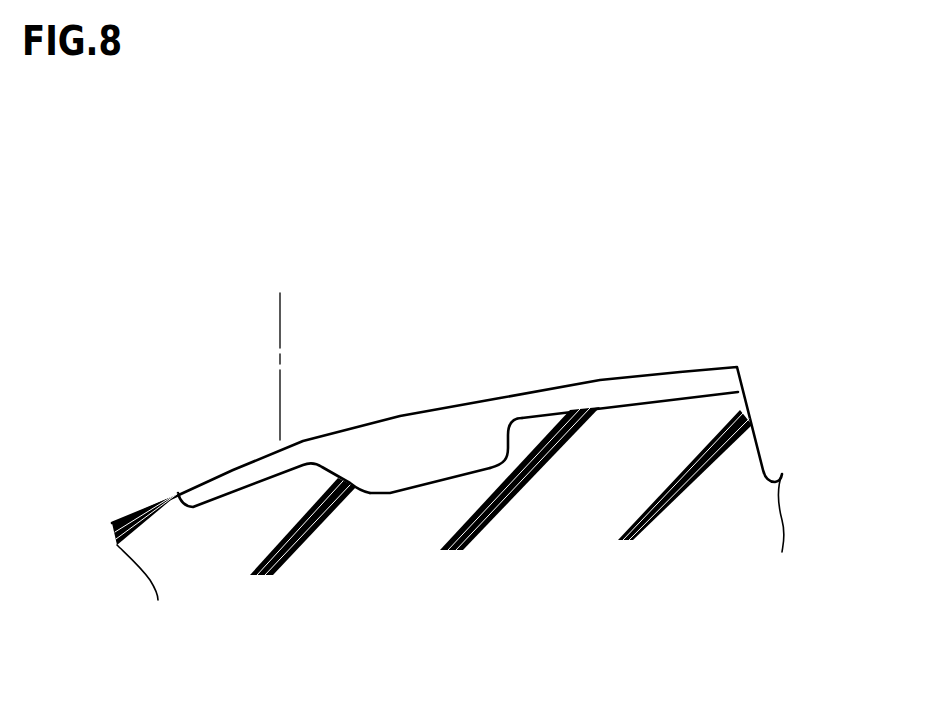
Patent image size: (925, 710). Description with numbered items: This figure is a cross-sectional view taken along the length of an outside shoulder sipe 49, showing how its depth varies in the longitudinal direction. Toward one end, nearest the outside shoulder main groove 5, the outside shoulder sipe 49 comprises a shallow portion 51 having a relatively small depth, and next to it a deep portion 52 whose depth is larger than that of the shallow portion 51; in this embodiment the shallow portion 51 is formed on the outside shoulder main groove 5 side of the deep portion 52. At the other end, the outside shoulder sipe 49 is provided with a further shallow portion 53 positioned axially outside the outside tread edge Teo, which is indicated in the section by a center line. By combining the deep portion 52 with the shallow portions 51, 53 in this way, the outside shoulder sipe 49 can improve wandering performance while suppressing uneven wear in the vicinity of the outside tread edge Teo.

The outside shoulder main groove 5 is at (782, 447).
The outside shoulder sipe 49 is at (424, 433).
The shallow portion 51 is at (632, 379).
The deep portion 52 is at (467, 454).
The shallow portion 53 is at (236, 464).
The outside tread edge Teo is at (281, 351).